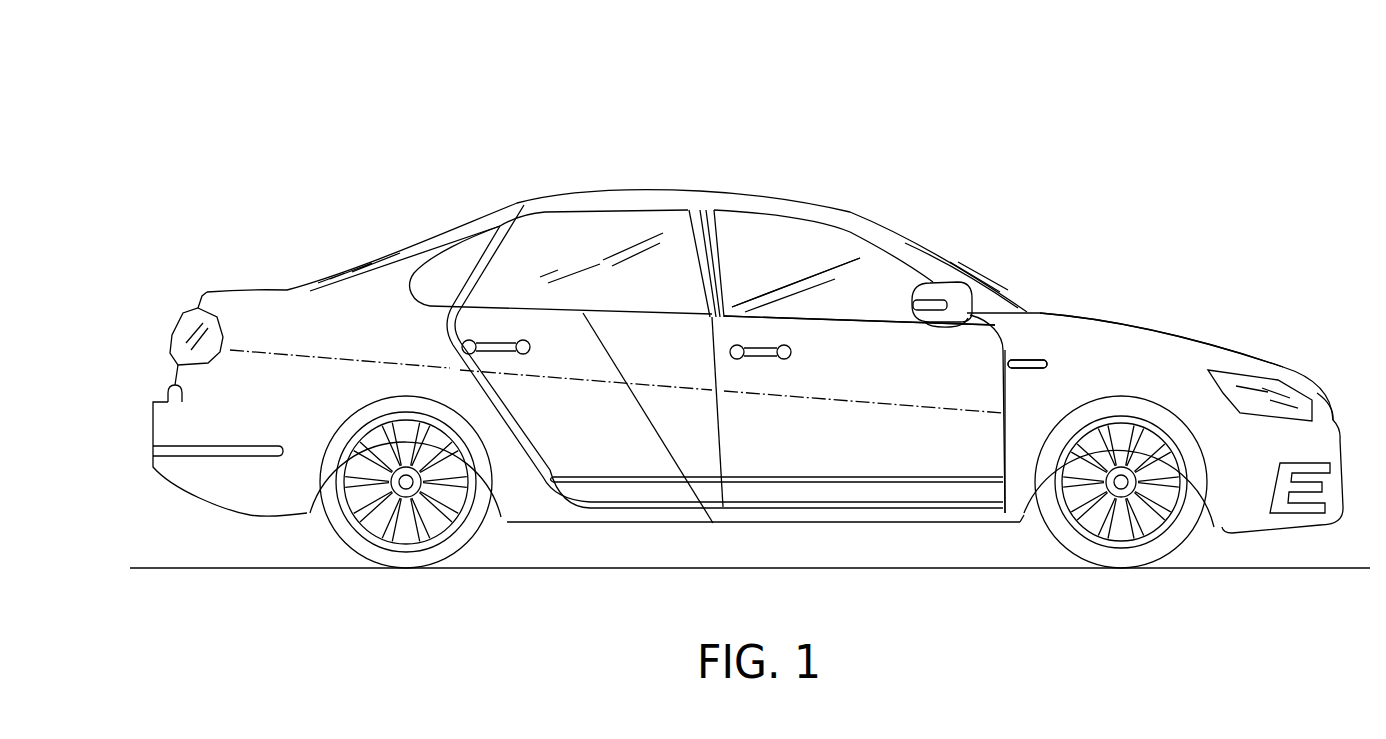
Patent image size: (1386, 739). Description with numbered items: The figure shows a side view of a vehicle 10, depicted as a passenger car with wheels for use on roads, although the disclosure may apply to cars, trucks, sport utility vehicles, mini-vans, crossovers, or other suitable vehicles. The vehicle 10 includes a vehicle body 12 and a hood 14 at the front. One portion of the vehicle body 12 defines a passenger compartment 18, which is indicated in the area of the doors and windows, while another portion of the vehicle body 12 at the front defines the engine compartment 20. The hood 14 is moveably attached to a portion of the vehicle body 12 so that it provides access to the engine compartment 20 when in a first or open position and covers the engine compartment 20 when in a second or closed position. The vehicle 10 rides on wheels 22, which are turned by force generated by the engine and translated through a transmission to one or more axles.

The vehicle 10 is at (205, 108).
The vehicle body 12 is at (862, 380).
The hood 14 is at (1142, 323).
The passenger compartment 18 is at (797, 248).
The engine compartment 20 is at (1083, 343).
The wheels 22 is at (1060, 467).